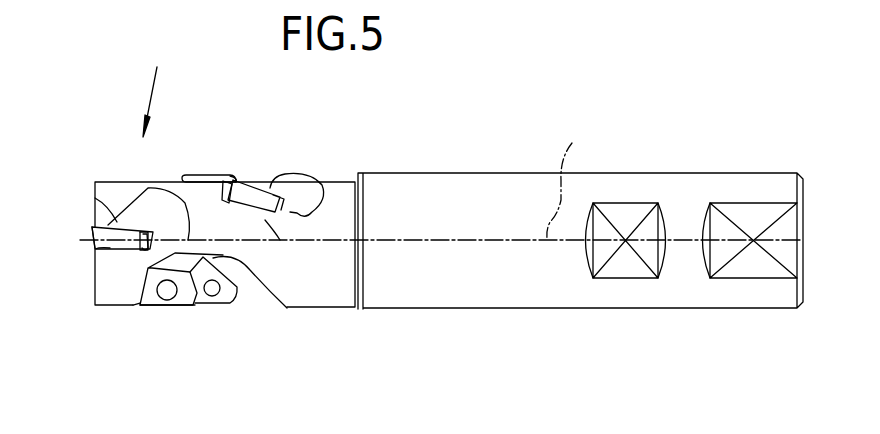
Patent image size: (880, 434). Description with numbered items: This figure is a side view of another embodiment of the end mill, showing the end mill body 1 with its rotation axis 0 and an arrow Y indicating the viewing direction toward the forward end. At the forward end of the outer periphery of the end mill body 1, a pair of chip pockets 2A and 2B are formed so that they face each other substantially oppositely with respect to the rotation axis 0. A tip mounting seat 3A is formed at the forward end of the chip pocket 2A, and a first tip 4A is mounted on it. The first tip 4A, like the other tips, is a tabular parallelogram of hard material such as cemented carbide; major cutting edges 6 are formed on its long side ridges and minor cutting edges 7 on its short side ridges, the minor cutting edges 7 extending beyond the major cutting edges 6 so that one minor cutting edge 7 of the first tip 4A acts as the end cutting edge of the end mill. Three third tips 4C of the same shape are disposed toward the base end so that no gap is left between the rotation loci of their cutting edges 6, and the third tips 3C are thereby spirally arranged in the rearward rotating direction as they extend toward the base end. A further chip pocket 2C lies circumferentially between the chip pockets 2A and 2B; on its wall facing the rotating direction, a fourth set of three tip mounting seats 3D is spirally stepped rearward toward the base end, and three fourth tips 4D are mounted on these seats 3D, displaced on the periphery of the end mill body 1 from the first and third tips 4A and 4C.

The end mill body 1 is at (503, 161).
The rotation axis 0 is at (567, 180).
The chip pocket 2A is at (118, 205).
The chip pocket 2B is at (267, 166).
The chip pocket 2C is at (218, 318).
The tip mounting seat 3A is at (118, 253).
The third tips 3C is at (258, 213).
The tip mounting seats 3D is at (203, 257).
The first tip 4A is at (110, 246).
The third tips 4C is at (251, 183).
The fourth tips 4D is at (205, 317).
The major cutting edge 6 is at (95, 198).
The minor cutting edge 7 is at (92, 226).
The view direction Y is at (157, 102).